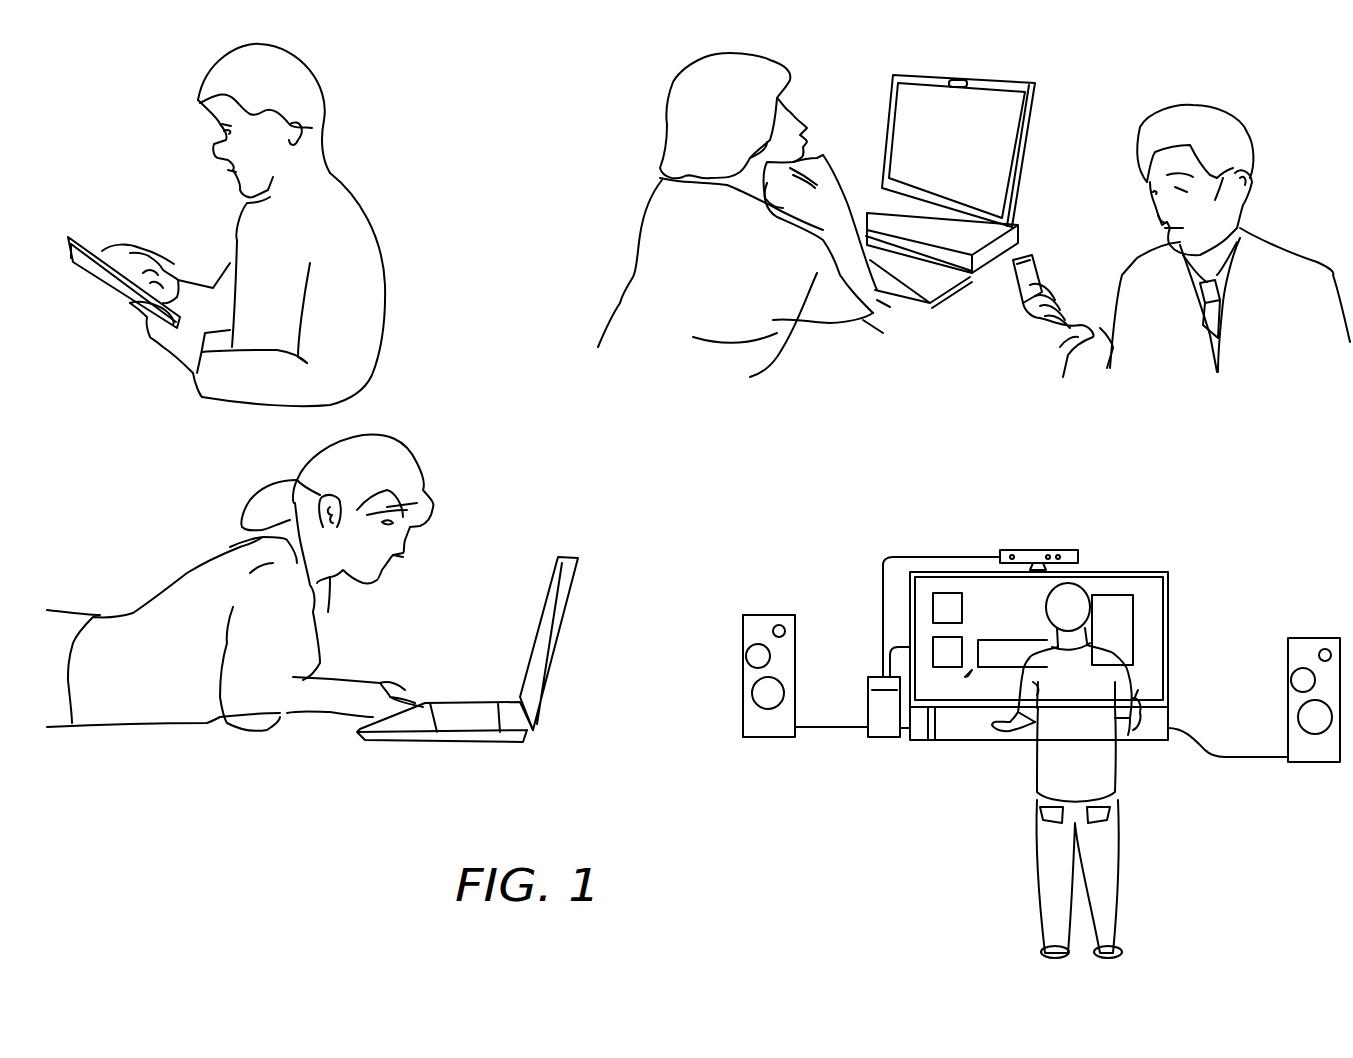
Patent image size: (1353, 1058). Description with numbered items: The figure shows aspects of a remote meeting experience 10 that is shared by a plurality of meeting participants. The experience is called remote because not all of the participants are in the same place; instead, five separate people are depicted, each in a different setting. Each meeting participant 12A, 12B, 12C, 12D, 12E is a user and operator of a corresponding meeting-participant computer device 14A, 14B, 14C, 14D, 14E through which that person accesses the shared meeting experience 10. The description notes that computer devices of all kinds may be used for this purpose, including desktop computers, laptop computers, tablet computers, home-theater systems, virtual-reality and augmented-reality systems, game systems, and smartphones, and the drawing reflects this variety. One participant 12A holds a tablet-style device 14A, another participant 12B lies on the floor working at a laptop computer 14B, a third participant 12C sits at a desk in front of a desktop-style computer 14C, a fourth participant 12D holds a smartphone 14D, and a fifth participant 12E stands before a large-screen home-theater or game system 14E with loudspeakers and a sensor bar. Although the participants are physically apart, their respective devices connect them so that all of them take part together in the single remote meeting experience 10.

The remote meeting experience 10 is at (762, 472).
The meeting participant 12A is at (328, 247).
The meeting participant 12B is at (172, 676).
The meeting participant 12C is at (726, 285).
The meeting participant 12D is at (1312, 368).
The meeting participant 12E is at (1098, 783).
The meeting-participant computer device 14A is at (117, 232).
The meeting-participant computer device 14B is at (617, 627).
The meeting-participant computer device 14C is at (1062, 155).
The meeting-participant computer device 14D is at (1027, 280).
The meeting-participant computer device 14E is at (1227, 598).